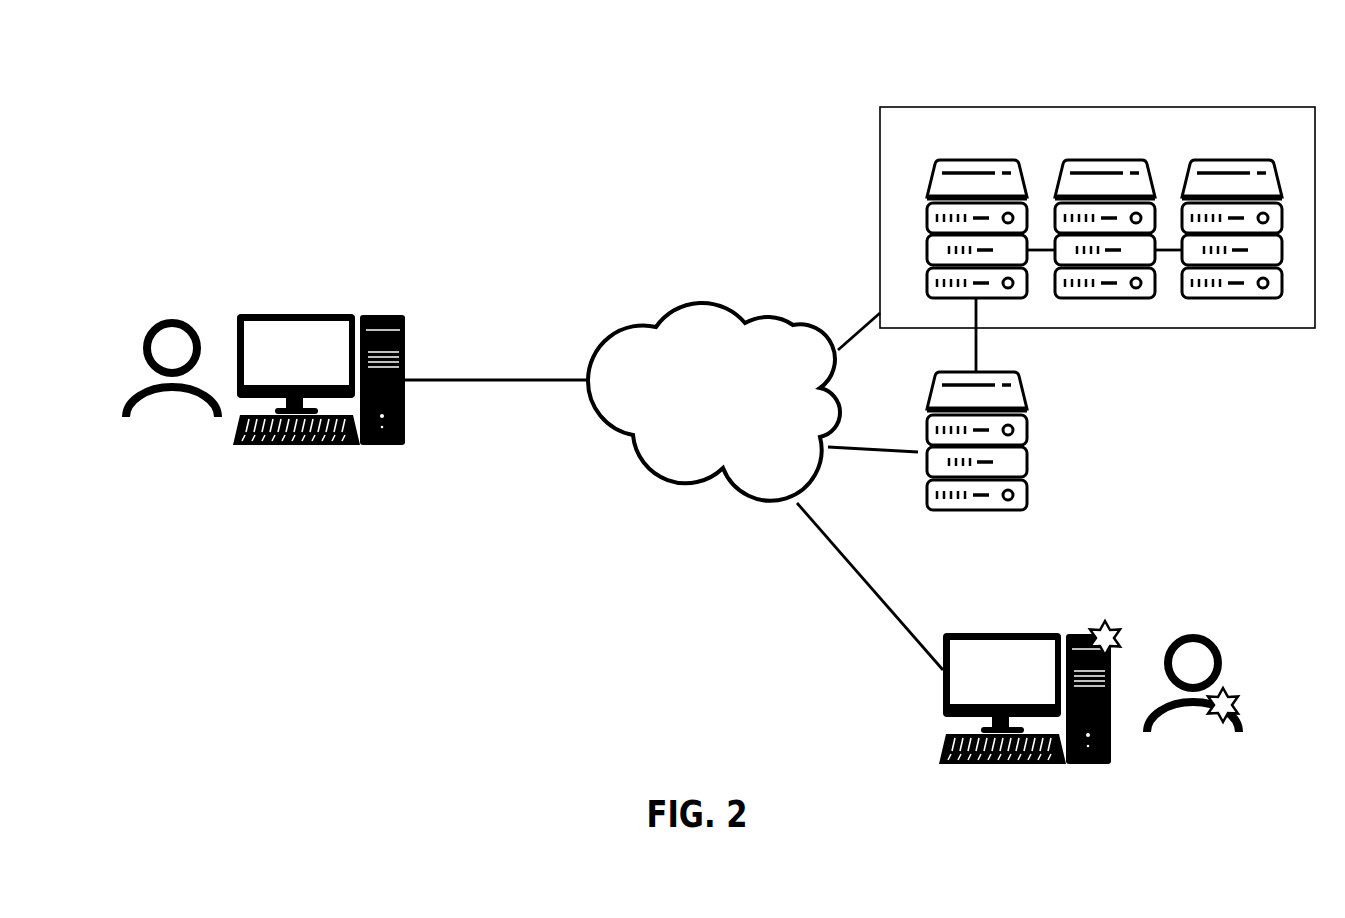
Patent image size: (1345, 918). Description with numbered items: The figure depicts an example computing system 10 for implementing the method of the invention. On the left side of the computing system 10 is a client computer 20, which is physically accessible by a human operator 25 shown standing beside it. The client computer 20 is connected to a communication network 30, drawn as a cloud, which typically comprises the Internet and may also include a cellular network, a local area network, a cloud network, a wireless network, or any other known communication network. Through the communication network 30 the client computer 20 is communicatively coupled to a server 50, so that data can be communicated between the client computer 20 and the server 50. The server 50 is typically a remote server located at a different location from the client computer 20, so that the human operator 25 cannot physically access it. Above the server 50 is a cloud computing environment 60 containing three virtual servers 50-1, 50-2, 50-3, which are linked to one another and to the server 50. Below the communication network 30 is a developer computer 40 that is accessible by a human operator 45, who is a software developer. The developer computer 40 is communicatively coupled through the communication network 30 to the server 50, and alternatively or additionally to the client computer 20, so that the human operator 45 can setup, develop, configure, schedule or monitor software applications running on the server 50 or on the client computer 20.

The computing system 10 is at (718, 64).
The client computer 20 is at (285, 358).
The human operator 25 is at (172, 388).
The communication network 30 is at (723, 416).
The developer computer 40 is at (1022, 685).
The human operator 45 is at (1182, 771).
The server 50 is at (992, 550).
The virtual server 50-1 is at (953, 141).
The virtual server 50-2 is at (1083, 141).
The virtual server 50-3 is at (1208, 142).
The cloud computing environment 60 is at (1267, 95).